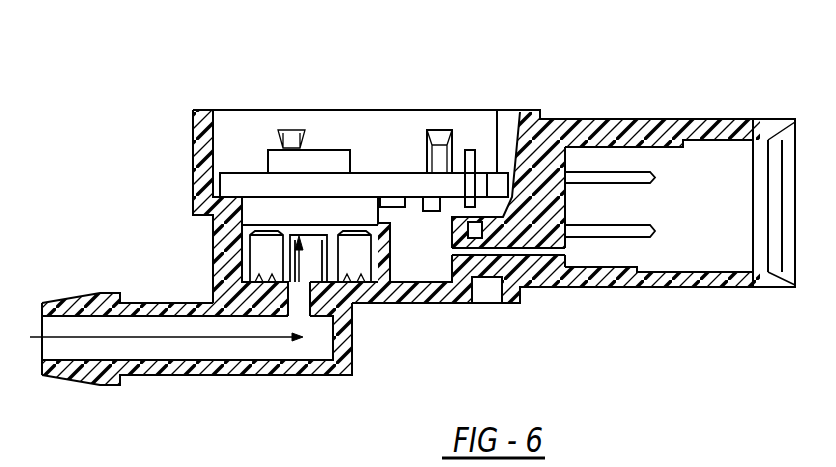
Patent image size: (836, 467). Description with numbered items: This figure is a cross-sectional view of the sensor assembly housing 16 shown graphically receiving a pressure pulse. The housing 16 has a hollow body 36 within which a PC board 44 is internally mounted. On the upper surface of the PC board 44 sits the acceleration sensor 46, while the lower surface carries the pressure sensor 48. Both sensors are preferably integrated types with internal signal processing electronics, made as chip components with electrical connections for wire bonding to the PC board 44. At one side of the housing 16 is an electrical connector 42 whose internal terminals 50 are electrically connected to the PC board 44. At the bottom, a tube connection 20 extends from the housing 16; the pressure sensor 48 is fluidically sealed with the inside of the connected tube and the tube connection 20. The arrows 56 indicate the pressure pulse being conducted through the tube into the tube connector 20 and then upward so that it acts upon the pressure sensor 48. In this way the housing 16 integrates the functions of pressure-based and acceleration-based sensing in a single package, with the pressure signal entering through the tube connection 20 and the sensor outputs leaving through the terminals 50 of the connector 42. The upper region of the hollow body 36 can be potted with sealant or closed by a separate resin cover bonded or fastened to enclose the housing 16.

The sensor assembly housing 16 is at (532, 110).
The tube connection 20 is at (150, 375).
The hollow body 36 is at (227, 145).
The electrical connector 42 is at (722, 119).
The PC board 44 is at (376, 172).
The acceleration sensor 46 is at (330, 150).
The pressure sensor 48 is at (262, 208).
The internal terminals 50 is at (630, 223).
The arrows 56 is at (337, 306).